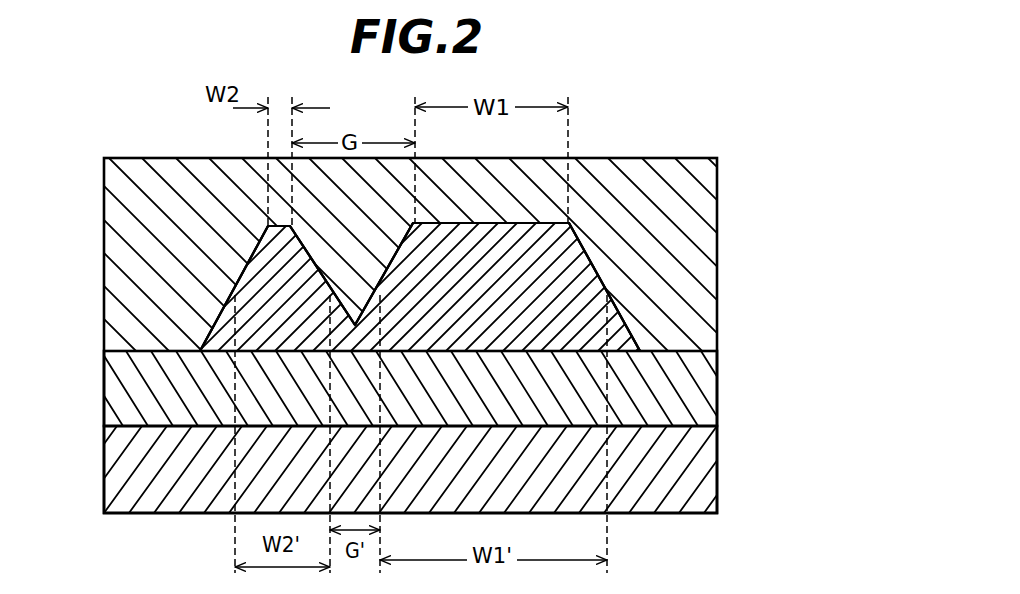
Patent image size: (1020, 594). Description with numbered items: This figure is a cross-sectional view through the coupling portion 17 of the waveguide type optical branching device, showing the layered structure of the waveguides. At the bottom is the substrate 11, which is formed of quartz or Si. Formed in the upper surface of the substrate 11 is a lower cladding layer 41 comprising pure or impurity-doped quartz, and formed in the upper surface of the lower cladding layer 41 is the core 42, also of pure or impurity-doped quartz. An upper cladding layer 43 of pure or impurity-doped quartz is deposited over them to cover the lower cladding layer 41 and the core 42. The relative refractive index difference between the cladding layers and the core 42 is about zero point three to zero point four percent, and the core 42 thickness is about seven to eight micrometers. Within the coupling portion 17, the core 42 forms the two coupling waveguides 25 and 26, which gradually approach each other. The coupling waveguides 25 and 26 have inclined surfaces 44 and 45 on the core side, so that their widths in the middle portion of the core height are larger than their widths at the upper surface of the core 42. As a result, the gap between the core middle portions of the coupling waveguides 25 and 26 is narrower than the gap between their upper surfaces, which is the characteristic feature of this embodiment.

The substrate 11 is at (717, 479).
The coupling portion 17 is at (733, 141).
The coupling waveguide 25 is at (553, 226).
The coupling waveguide 26 is at (263, 237).
The lower cladding layer 41 is at (717, 388).
The core 42 is at (620, 322).
The upper cladding layer 43 is at (698, 190).
The inclined surface 44 is at (401, 243).
The inclined surface 45 is at (303, 248).